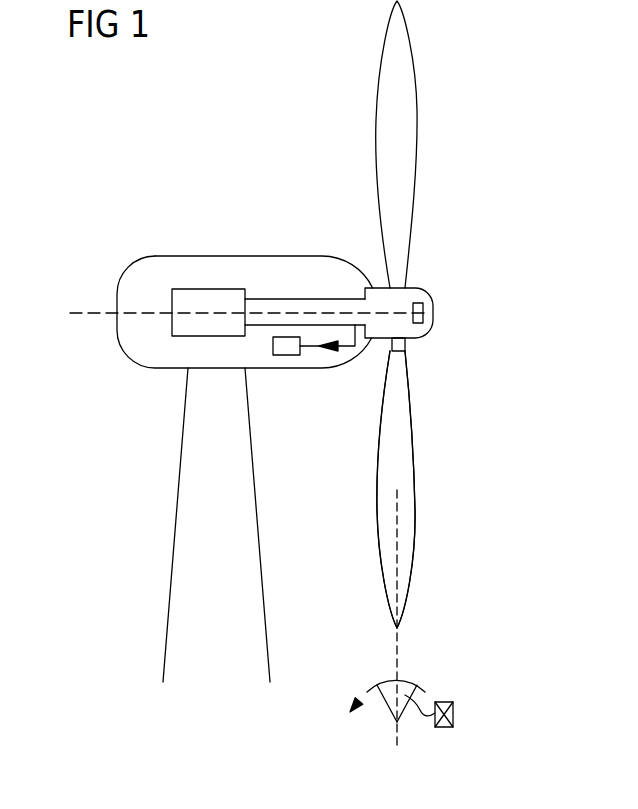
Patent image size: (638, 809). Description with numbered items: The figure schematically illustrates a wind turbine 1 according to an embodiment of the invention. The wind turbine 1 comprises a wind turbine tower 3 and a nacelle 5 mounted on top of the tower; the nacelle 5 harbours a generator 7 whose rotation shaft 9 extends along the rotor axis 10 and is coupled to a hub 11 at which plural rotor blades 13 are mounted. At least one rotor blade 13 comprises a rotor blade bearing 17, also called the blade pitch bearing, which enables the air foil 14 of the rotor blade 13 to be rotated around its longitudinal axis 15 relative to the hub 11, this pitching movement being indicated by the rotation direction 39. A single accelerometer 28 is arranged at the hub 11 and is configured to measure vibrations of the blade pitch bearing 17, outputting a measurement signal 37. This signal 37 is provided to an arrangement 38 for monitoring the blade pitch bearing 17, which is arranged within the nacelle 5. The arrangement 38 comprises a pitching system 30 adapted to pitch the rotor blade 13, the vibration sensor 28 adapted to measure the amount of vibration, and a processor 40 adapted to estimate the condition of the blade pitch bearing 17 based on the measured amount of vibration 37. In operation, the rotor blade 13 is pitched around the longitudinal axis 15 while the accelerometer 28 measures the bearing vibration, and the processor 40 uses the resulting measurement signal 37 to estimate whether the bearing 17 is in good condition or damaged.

The wind turbine 1 is at (507, 213).
The wind turbine tower 3 is at (180, 510).
The nacelle 5 is at (241, 256).
The generator 7 is at (210, 289).
The rotation shaft 9 is at (307, 299).
The rotor axis 10 is at (88, 313).
The hub 11 is at (429, 288).
The rotor blades 13 is at (408, 143).
The air foil 14 is at (406, 422).
The longitudinal axis 15 is at (398, 648).
The rotor blade bearing 17 is at (405, 345).
The accelerometer 28 is at (433, 310).
The pitching system 30 is at (454, 387).
The measurement signal 37 is at (317, 347).
The arrangement for monitoring the blade pitch bearing 38 is at (295, 393).
The rotation direction 39 is at (385, 683).
The processor 40 is at (273, 347).